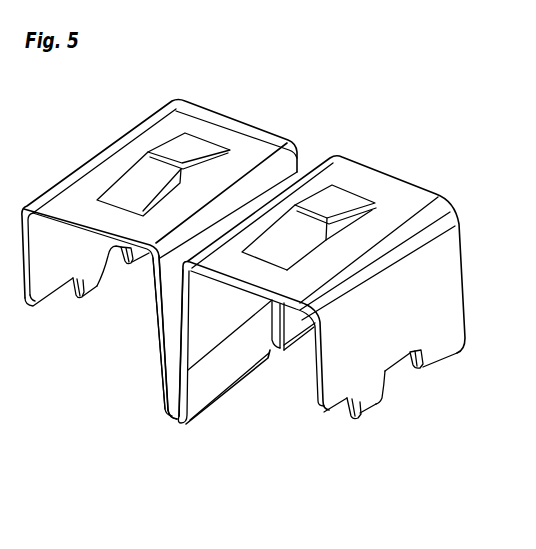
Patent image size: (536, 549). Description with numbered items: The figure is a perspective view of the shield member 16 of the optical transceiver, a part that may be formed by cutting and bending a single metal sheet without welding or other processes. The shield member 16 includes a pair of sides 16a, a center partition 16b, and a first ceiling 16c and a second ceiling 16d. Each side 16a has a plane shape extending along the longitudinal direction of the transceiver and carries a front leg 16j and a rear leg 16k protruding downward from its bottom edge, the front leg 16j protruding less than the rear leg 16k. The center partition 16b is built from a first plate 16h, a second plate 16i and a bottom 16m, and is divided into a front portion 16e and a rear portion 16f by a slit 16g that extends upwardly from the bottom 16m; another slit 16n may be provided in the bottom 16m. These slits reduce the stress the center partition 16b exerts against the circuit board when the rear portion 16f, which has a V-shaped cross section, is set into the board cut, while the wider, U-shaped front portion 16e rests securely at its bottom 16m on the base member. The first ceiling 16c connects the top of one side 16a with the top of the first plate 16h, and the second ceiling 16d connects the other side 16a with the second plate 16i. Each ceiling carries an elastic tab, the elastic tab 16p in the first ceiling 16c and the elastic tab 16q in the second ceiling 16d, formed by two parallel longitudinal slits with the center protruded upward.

The shield member 16 is at (367, 62).
The side 16a is at (52, 253).
The center partition 16b is at (333, 492).
The first ceiling 16c is at (401, 193).
The second ceiling 16d is at (262, 132).
The front portion 16e is at (309, 352).
The rear portion 16f is at (232, 394).
The slit 16g is at (275, 354).
The first plate 16h is at (193, 353).
The second plate 16i is at (174, 320).
The front leg 16j is at (150, 256).
The rear leg 16k is at (97, 284).
The bottom 16m is at (302, 343).
The slit 16n is at (177, 424).
The elastic tab 16p is at (339, 200).
The elastic tab 16q is at (197, 143).